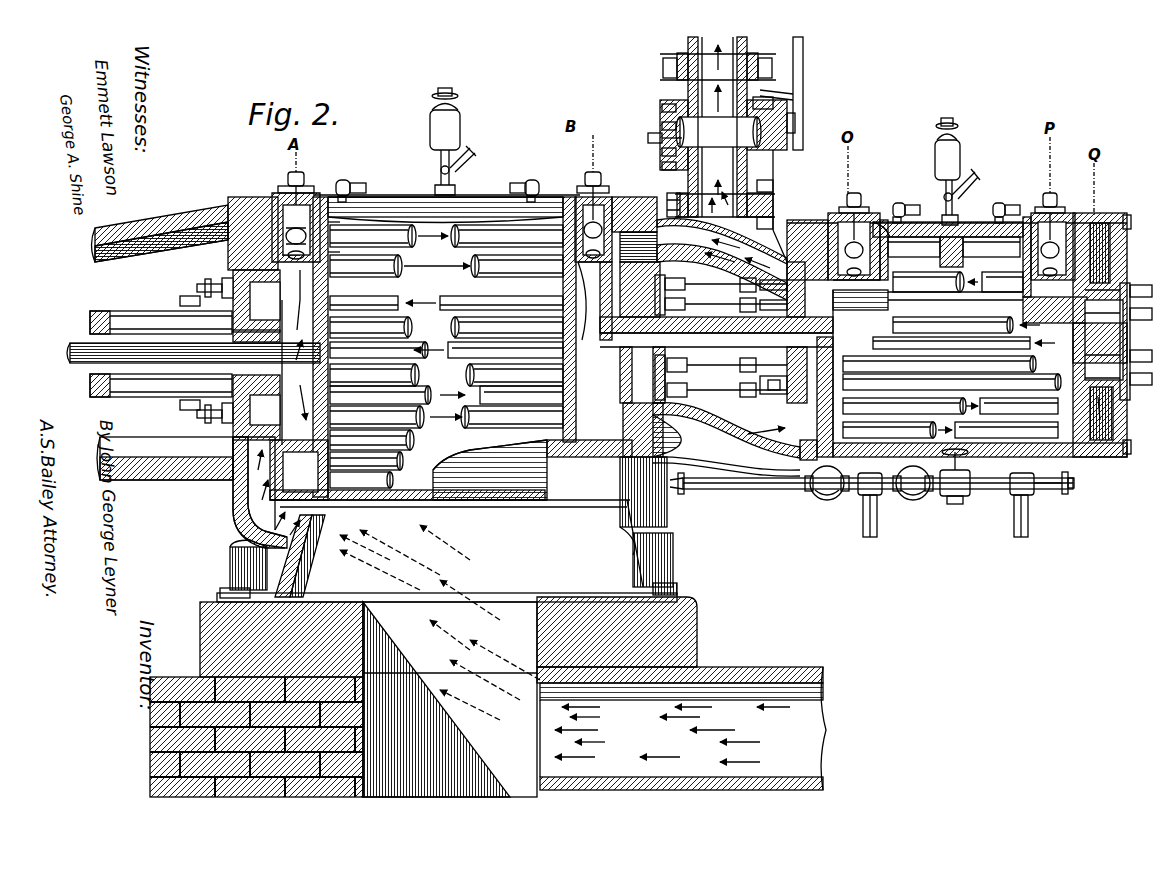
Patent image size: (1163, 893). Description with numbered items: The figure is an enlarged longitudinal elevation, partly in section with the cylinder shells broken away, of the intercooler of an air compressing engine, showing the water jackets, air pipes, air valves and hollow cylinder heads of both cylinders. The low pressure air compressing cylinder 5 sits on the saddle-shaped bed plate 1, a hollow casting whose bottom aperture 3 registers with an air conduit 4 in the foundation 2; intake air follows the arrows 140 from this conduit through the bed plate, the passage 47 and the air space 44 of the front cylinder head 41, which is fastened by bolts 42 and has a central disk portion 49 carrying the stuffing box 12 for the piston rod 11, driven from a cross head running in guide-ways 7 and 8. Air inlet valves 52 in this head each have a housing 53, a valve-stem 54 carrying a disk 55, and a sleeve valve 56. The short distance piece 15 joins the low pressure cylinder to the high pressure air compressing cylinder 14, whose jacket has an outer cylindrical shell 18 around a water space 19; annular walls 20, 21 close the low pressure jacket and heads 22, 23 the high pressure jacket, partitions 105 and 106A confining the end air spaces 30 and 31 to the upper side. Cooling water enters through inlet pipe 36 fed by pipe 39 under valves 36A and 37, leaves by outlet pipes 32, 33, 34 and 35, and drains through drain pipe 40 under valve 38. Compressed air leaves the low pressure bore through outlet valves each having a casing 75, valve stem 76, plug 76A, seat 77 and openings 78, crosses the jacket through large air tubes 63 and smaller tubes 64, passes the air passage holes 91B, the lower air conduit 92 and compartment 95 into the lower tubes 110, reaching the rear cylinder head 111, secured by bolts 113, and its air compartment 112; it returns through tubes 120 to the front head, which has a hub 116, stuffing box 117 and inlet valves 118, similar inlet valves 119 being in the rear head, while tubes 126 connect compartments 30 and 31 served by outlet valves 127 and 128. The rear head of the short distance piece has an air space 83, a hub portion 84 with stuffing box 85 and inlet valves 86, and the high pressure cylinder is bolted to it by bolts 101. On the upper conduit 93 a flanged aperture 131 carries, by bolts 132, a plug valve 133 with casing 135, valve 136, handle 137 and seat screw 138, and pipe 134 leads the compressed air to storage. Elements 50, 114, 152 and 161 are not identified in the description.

The bed plate 1 is at (431, 549).
The foundation 2 is at (697, 636).
The aperture 3 is at (343, 699).
The air conduit 4 is at (826, 705).
The low pressure air compressing cylinder 5 is at (452, 394).
The guide-way 7 is at (190, 316).
The guide-way 8 is at (161, 394).
The piston-rod 11 is at (70, 351).
The stuffing-box 12 is at (294, 350).
The high pressure air compressing cylinder 14 is at (955, 303).
The short distance piece 15 is at (738, 296).
The outer cylindrical shell 18 is at (988, 462).
The water space 19 is at (1032, 475).
The annular wall 20 is at (310, 490).
The annular wall 21 is at (584, 350).
The annular wall 22 is at (880, 228).
The annular wall 23 is at (1022, 215).
The air space 30 is at (860, 210).
The air space 31 is at (1035, 215).
The water outlet pipe 32 is at (366, 203).
The water outlet pipe 33 is at (522, 203).
The water outlet pipe 34 is at (905, 210).
The water outlet pipe 35 is at (1000, 210).
The water inlet pipe 36 is at (772, 492).
The valve 36A is at (830, 500).
The valve 37 is at (915, 496).
The valve 38 is at (1045, 489).
The pipe 39 is at (870, 514).
The drain pipe 40 is at (1021, 525).
The cylinder head 41 is at (228, 484).
The bolt 42 is at (226, 204).
The air space 44 is at (232, 282).
The passage 47 is at (240, 518).
The central disk portion 49 is at (232, 302).
The valve casing 50 is at (280, 198).
The air inlet valve 52 is at (222, 290).
The housing 53 is at (228, 448).
The valve-stem 54 is at (200, 293).
The disk 55 is at (256, 321).
The valve 56 is at (297, 360).
The air tube 63 is at (446, 267).
The air tube 64 is at (446, 402).
The casing 75 is at (290, 178).
The valve stem 76 is at (318, 210).
The plug 76A is at (614, 172).
The valve seat 77 is at (339, 264).
The opening 78 is at (339, 234).
The interior air space 83 is at (636, 203).
The hub portion 84 is at (716, 341).
The stuffing box 85 is at (716, 324).
The air inlet valve 86 is at (686, 337).
The air passage hole 91B is at (612, 420).
The air conduit 92 is at (726, 440).
The air conduit 93 is at (722, 259).
The air compartment 95 is at (803, 458).
The bolt 101 is at (777, 230).
The partition 105 is at (879, 303).
The partition 106A is at (1017, 320).
The air tube 110 is at (952, 398).
The rear cylinder head 111 is at (1118, 412).
The air compartment 112 is at (1102, 458).
The bolt 113 is at (1127, 230).
The bolt 114 is at (730, 360).
The central hub 116 is at (768, 385).
The stuffing box 117 is at (760, 305).
The air inlet valve 118 is at (736, 338).
The air inlet valve 119 is at (1136, 285).
The air tube 120 is at (964, 334).
The air tube 126 is at (955, 264).
The outlet valve 127 is at (832, 215).
The outlet valve 128 is at (1055, 200).
The flanged aperture 131 is at (725, 208).
The bolt 132 is at (768, 205).
The plug valve 133 is at (720, 188).
The pipe 134 is at (717, 127).
The casing 135 is at (718, 82).
The valve 136 is at (723, 135).
The operating handle 137 is at (805, 98).
The screw 138 is at (660, 140).
The arrows 140 is at (393, 580).
The flange 152 is at (668, 200).
The wall 161 is at (782, 464).